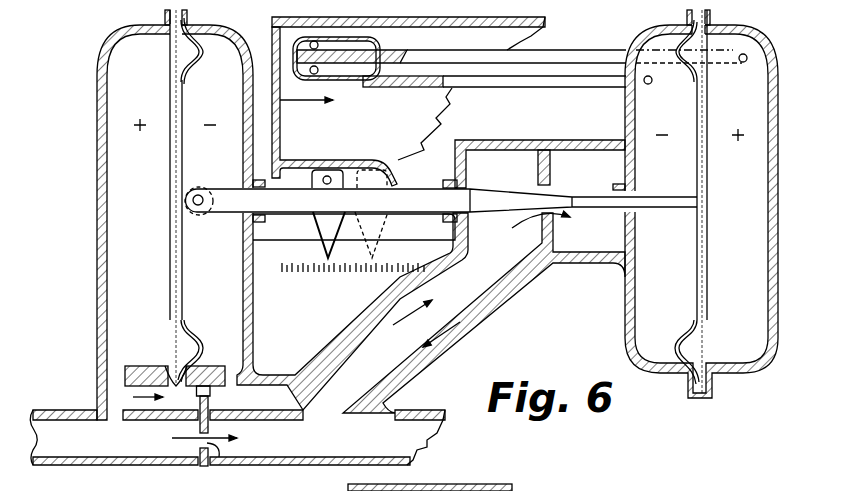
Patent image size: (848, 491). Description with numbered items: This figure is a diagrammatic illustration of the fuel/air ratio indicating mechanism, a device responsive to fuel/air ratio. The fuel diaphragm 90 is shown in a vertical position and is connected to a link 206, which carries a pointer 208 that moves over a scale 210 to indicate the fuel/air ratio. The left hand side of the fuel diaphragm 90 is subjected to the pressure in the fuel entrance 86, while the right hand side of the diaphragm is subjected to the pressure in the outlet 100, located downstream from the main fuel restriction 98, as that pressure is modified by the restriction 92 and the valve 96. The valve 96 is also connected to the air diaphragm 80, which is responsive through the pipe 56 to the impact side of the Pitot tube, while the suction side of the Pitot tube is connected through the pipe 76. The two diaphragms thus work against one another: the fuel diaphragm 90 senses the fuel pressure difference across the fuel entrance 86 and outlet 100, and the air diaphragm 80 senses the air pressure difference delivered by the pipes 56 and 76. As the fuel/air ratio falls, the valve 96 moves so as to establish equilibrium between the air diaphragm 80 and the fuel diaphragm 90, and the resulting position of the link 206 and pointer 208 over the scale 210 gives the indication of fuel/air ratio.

The pipe 56 is at (464, 49).
The pipe 76 is at (410, 88).
The link 206 is at (437, 174).
The valve 96 is at (494, 193).
The pointer 208 is at (323, 229).
The scale 210 is at (312, 321).
The fuel diaphragm 90 is at (193, 328).
The restriction 92 is at (211, 398).
The fuel entrance 86 is at (133, 398).
The outlet 100 is at (355, 453).
The main fuel restriction 98 is at (208, 466).
The air diaphragm 80 is at (682, 330).